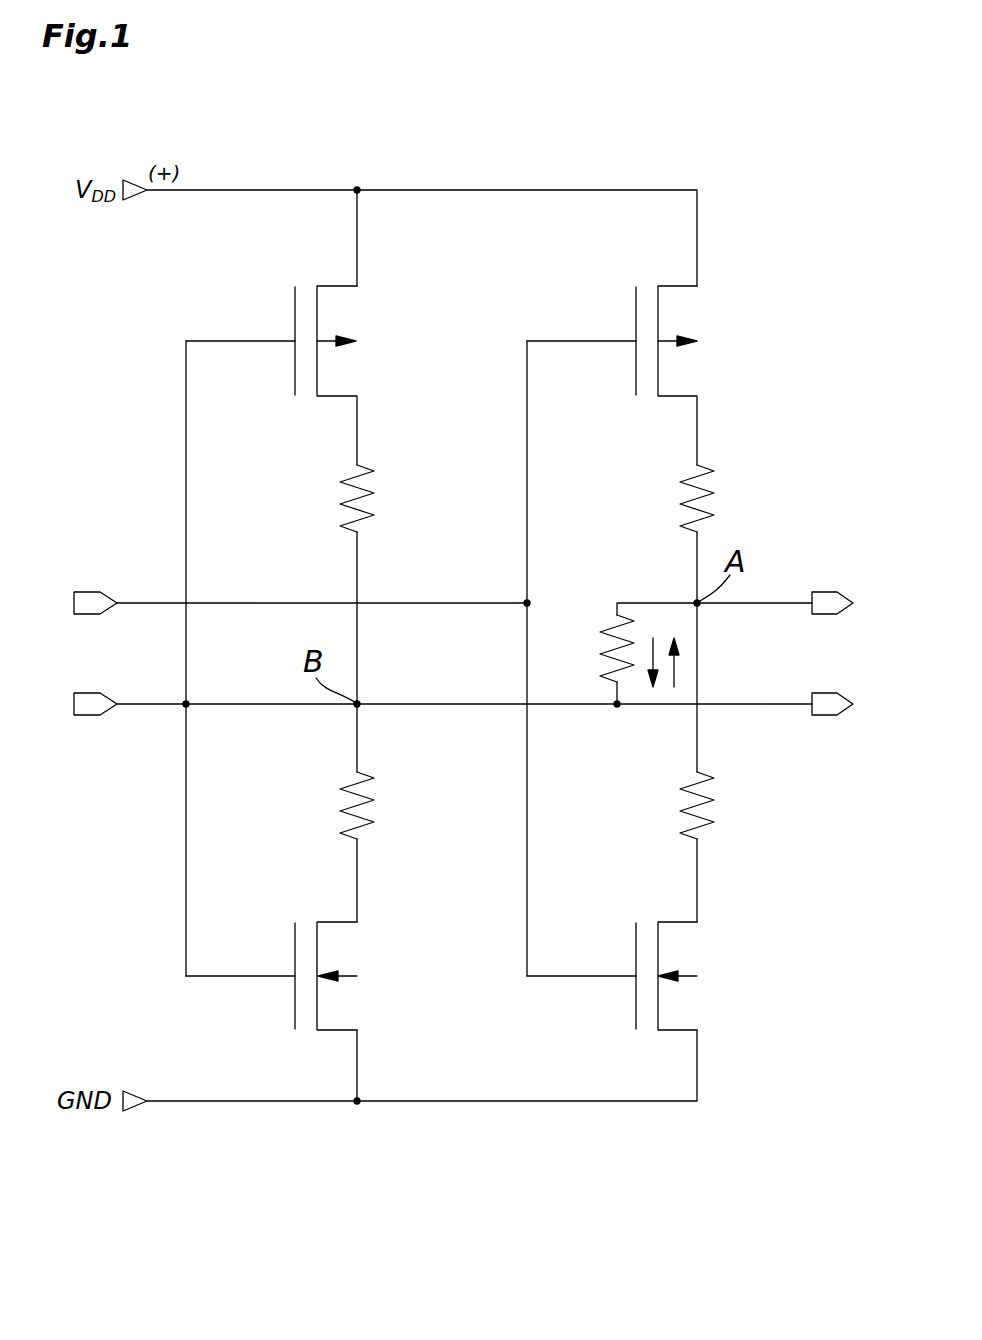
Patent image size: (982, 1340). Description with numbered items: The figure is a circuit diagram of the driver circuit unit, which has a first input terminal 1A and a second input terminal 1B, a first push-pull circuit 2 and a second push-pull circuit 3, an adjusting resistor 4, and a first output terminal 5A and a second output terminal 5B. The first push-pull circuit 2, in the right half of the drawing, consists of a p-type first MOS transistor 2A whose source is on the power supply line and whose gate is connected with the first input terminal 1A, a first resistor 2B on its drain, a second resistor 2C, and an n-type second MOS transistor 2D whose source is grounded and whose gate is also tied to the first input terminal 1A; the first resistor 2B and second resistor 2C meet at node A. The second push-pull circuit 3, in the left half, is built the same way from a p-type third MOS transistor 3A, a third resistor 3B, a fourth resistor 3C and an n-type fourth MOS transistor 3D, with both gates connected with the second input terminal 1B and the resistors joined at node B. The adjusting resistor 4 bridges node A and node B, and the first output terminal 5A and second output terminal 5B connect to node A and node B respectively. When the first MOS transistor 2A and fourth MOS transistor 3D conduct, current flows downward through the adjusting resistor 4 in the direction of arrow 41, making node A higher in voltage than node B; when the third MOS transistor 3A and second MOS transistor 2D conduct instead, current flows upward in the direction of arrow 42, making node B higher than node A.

The first input terminal 1A is at (90, 592).
The second input terminal 1B is at (88, 716).
The first push-pull circuit 2 is at (673, 755).
The first MOS transistor 2A is at (675, 313).
The first resistor 2B is at (705, 492).
The second resistor 2C is at (707, 797).
The second MOS transistor 2D is at (677, 949).
The second push-pull circuit 3 is at (423, 739).
The third MOS transistor 3A is at (340, 318).
The third resistor 3B is at (363, 492).
The fourth resistor 3C is at (365, 792).
The fourth MOS transistor 3D is at (347, 948).
The adjusting resistor 4 is at (604, 630).
The arrow 41 is at (652, 650).
The arrow 42 is at (675, 667).
The first output terminal 5A is at (828, 592).
The second output terminal 5B is at (828, 716).